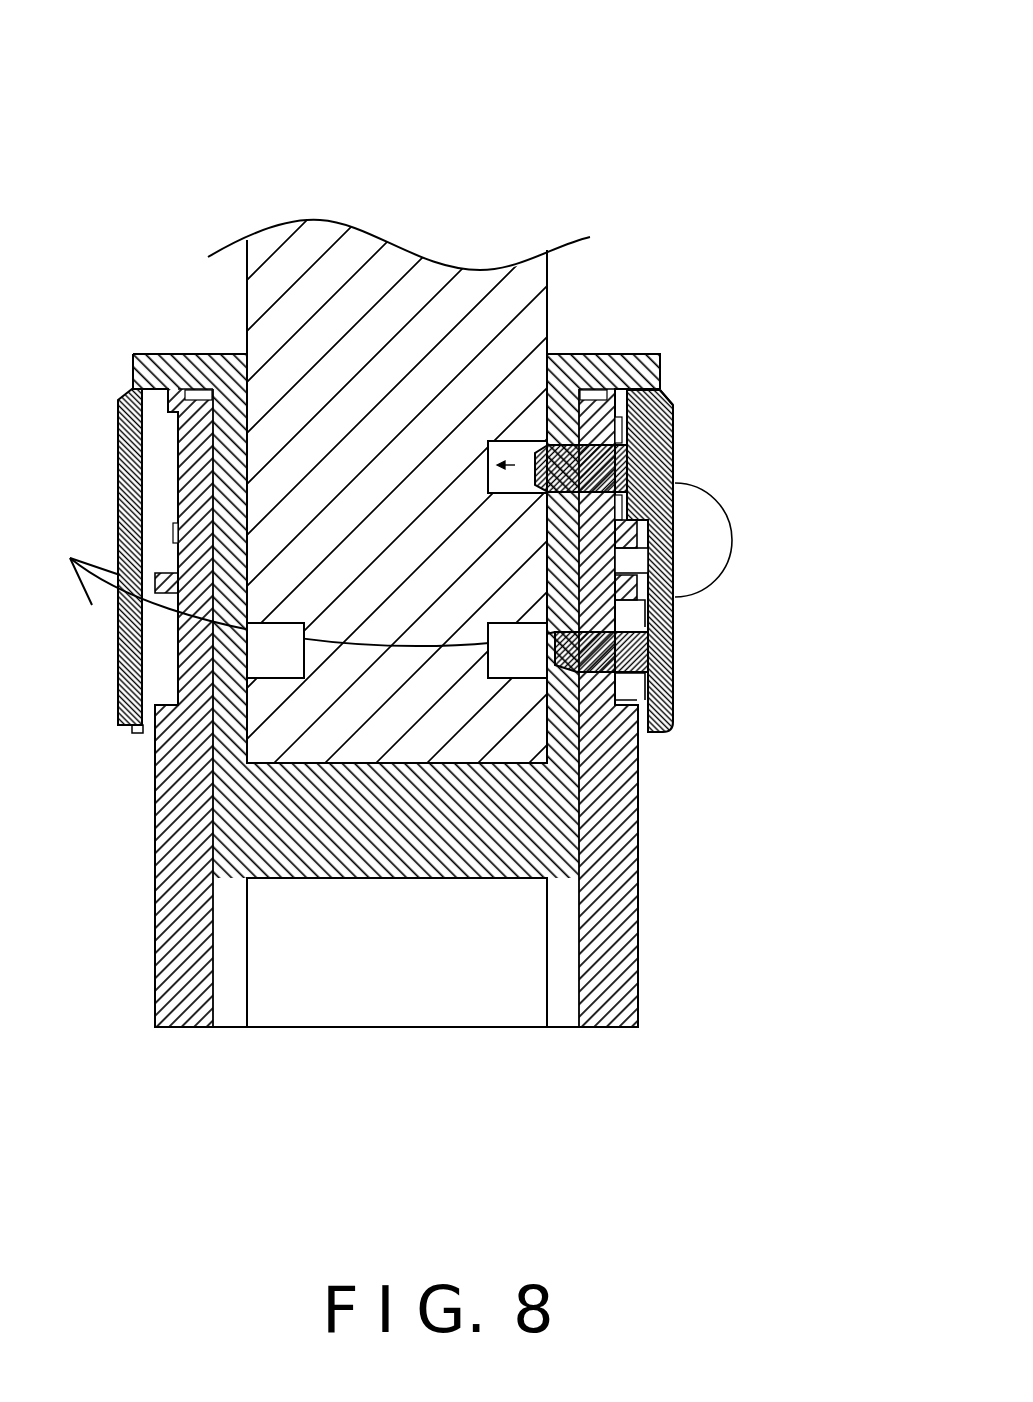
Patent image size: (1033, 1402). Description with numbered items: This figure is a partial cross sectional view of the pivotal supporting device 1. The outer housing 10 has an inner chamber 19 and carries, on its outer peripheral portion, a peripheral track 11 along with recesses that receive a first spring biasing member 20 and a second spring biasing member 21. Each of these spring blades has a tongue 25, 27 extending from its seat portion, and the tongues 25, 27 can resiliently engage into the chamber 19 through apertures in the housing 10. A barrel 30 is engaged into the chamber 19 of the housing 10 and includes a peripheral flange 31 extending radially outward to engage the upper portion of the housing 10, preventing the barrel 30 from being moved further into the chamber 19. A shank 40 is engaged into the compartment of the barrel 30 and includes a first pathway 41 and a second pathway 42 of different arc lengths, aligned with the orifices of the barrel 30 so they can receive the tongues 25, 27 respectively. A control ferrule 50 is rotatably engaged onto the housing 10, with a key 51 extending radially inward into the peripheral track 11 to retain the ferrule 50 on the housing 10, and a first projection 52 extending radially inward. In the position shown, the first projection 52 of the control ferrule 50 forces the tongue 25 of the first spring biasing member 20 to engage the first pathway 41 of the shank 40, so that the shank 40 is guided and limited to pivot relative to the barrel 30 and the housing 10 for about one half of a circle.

The pivotal supporting device 1 is at (367, 175).
The housing 10 is at (620, 923).
The peripheral track 11 is at (655, 550).
The inner chamber 19 is at (575, 842).
The first spring biasing member 20 is at (673, 388).
The second spring biasing member 21 is at (673, 698).
The tongue of the first spring biasing member 25 is at (673, 470).
The tongue of the second spring biasing member 27 is at (673, 648).
The barrel 30 is at (230, 995).
The peripheral flange 31 is at (650, 355).
The shank 40 is at (337, 268).
The first pathway 41 is at (515, 445).
The second pathway 42 is at (520, 667).
The control ferrule 50 is at (673, 402).
The key of the control ferrule 51 is at (675, 562).
The first projection 52 is at (673, 440).